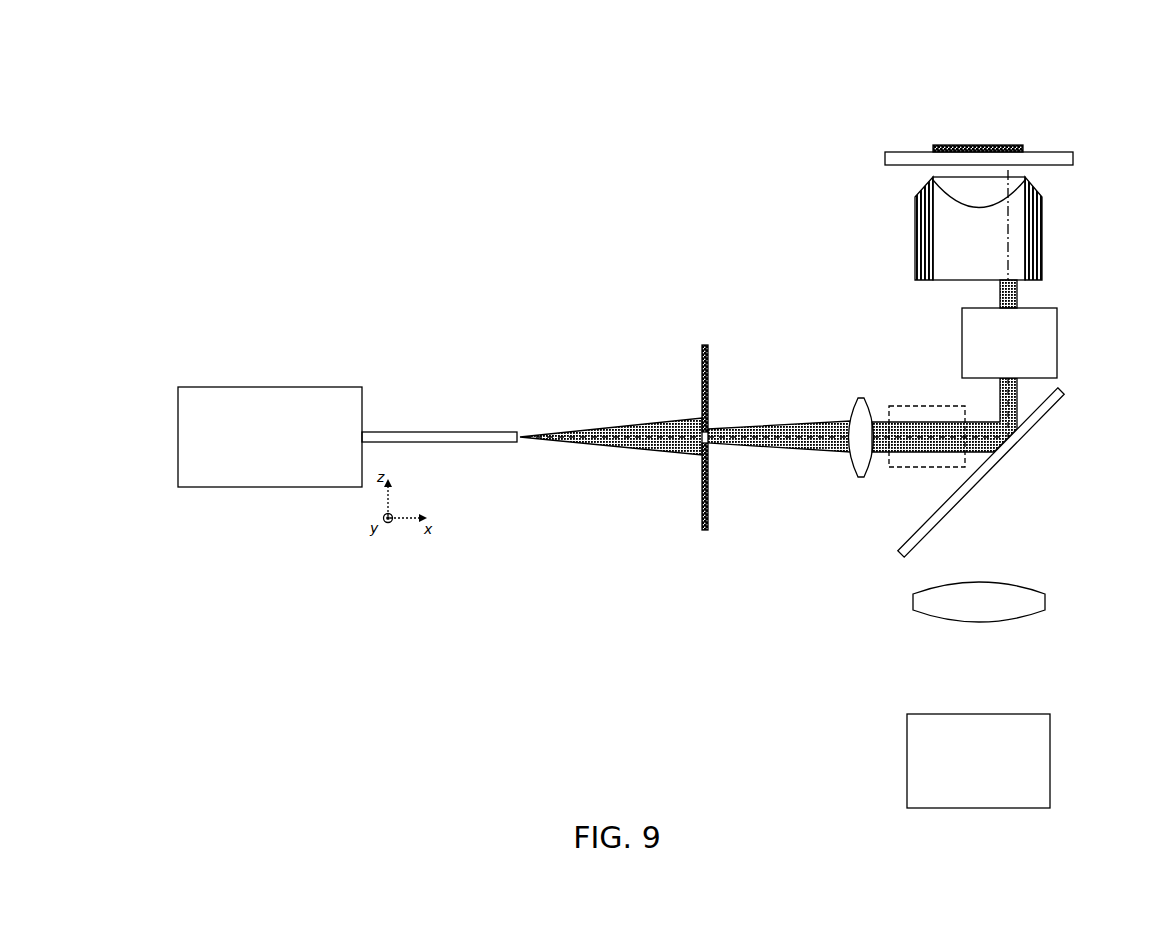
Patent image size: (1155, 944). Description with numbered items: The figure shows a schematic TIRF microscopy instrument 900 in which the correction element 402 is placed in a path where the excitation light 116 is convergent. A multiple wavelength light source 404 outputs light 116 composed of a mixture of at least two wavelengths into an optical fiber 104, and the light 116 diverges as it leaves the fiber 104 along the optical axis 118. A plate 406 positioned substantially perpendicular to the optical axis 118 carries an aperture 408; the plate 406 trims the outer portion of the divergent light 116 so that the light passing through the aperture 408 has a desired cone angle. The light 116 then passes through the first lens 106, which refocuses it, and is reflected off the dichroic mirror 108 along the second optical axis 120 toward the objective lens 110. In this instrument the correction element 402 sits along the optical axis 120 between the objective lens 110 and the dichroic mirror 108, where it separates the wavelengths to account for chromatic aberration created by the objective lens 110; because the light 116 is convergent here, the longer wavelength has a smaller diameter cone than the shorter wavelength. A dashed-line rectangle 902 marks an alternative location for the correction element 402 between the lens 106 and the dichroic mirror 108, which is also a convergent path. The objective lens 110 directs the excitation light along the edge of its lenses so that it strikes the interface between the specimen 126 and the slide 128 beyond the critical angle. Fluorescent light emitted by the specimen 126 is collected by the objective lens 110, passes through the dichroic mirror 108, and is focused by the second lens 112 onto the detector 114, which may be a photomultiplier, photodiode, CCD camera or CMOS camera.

The TIRF microscopy instrument 900 is at (386, 236).
The multiple wavelength light source 404 is at (272, 485).
The optical fiber 104 is at (493, 444).
The light 116 is at (628, 451).
The optical axis 118 is at (671, 434).
The plate 406 is at (709, 372).
The aperture 408 is at (709, 433).
The first lens 106 is at (852, 410).
The dashed-line rectangle 902 is at (930, 405).
The correction element 402 is at (1058, 343).
The second optical axis 120 is at (1018, 296).
The dichroic mirror 108 is at (1058, 408).
The objective lens 110 is at (915, 223).
The slide 128 is at (1074, 158).
The specimen 126 is at (979, 144).
The second lens 112 is at (1012, 585).
The detector 114 is at (1043, 790).